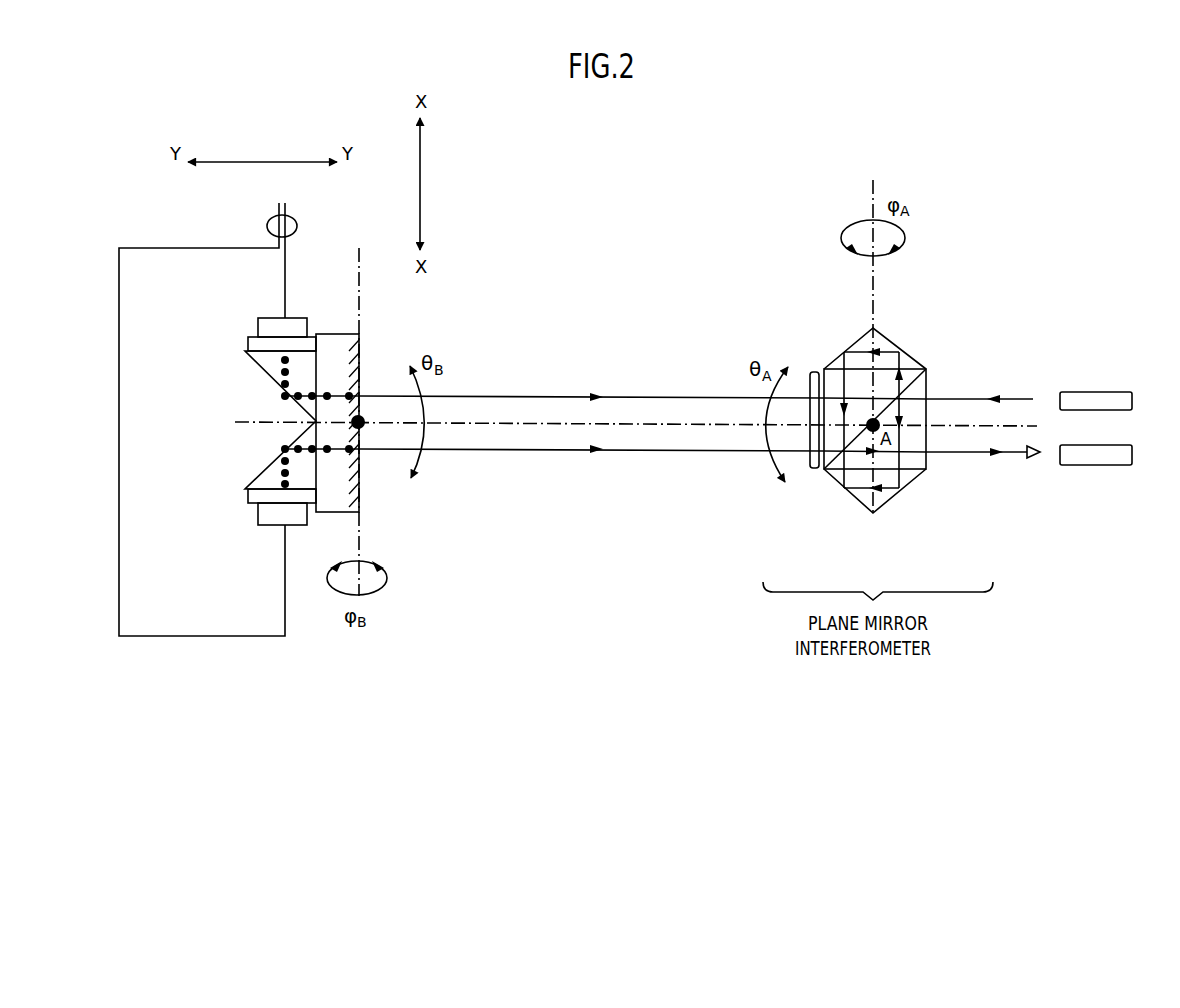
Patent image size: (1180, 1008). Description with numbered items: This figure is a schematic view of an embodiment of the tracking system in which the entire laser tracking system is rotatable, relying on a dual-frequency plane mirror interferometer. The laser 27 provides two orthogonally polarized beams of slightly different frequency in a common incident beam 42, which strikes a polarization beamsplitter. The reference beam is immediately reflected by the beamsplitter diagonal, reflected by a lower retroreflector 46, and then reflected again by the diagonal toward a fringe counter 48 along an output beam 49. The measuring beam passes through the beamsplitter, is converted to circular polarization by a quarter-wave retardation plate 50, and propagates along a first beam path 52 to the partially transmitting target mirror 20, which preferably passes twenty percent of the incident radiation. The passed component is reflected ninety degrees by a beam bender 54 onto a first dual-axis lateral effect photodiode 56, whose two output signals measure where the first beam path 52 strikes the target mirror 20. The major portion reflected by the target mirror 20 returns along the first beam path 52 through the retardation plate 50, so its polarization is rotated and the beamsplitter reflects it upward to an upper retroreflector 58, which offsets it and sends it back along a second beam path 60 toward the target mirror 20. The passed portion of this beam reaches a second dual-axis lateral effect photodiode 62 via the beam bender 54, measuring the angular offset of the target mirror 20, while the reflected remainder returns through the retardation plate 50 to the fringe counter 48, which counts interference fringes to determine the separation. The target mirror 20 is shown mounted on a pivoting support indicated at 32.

The target mirror 20 is at (358, 350).
The laser 27 is at (1060, 393).
The pivot bearing 32 is at (297, 228).
The incident beam 42 is at (965, 398).
The lower retroreflector 46 is at (898, 493).
The fringe counter 48 is at (1060, 465).
The output beam 49 is at (972, 455).
The quarter-wave retardation plate 50 is at (815, 476).
The first beam path 52 is at (532, 395).
The beam bender 54 is at (270, 462).
The first dual-axis lateral effect photodiode 56 is at (258, 320).
The upper retroreflector 58 is at (845, 318).
The second beam path 60 is at (574, 452).
The second dual-axis lateral effect photodiode 62 is at (258, 514).